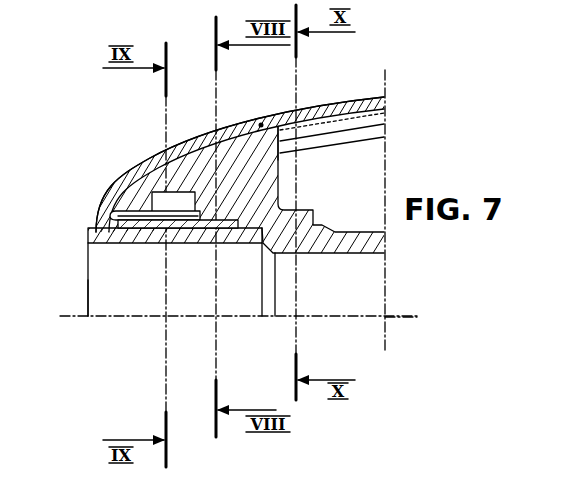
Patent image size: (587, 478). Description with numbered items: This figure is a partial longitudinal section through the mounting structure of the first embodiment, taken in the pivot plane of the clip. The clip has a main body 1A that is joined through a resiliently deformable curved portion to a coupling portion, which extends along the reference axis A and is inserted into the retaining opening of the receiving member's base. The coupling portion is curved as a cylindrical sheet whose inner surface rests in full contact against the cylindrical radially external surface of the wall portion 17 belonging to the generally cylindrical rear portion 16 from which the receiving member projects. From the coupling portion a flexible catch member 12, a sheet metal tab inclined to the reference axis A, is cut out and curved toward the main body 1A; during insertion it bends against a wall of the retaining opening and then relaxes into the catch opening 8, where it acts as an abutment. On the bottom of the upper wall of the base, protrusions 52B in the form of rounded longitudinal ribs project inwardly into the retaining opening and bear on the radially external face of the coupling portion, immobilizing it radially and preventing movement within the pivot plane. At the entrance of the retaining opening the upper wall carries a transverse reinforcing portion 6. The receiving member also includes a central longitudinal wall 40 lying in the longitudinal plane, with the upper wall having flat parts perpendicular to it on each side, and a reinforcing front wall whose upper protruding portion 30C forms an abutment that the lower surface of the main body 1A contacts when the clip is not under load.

The main body 1A is at (350, 94).
The transverse reinforcing portion 6 is at (111, 191).
The catch opening 8 is at (184, 208).
The flexible catch member 12 is at (147, 196).
The generally cylindrical rear portion 16 is at (148, 286).
The wall portion 17 is at (88, 231).
The upper protruding portion 30C is at (261, 125).
The central longitudinal wall 40 is at (240, 172).
The protrusions 52B is at (132, 236).
The reference axis A is at (226, 218).